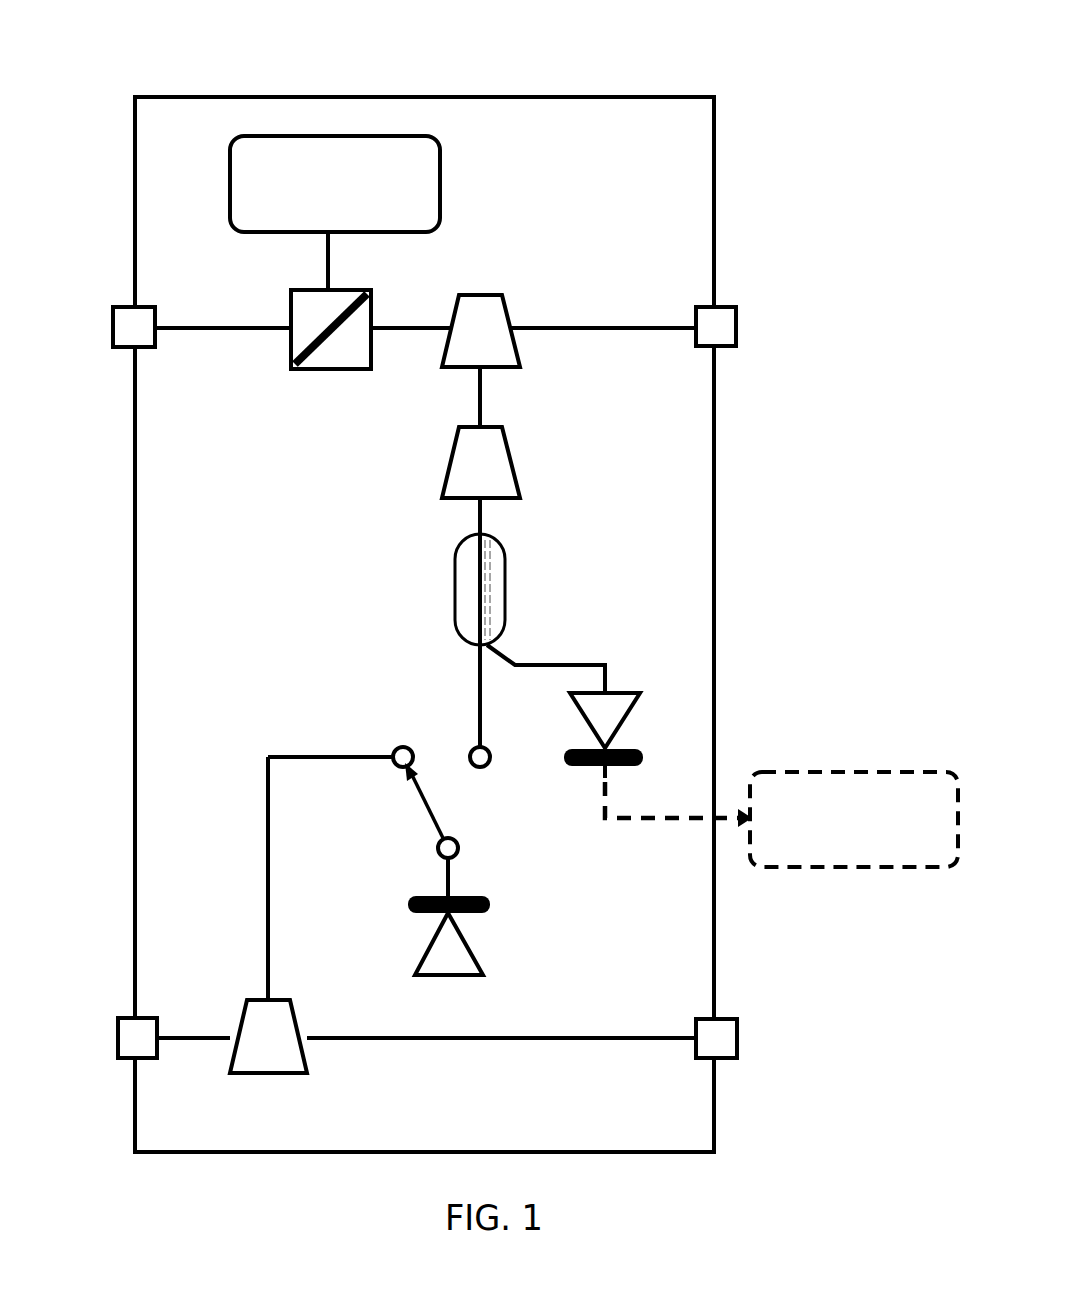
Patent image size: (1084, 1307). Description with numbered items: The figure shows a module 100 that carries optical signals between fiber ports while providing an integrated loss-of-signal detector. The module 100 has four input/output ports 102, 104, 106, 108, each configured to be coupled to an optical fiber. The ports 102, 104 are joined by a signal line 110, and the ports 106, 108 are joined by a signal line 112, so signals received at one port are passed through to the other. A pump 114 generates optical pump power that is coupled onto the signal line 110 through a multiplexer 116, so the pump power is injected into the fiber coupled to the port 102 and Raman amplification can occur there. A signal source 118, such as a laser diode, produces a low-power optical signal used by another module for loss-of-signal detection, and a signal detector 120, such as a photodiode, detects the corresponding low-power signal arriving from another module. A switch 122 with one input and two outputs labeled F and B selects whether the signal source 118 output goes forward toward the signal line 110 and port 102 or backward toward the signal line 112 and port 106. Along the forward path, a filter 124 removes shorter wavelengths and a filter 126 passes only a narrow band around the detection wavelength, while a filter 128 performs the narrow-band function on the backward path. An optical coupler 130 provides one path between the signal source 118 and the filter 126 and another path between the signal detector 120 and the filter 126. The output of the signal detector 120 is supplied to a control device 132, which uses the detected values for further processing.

The module 100 is at (586, 46).
The input/output port 102 is at (121, 304).
The input/output port 104 is at (727, 302).
The input/output port 106 is at (122, 1015).
The input/output port 108 is at (727, 1015).
The signal line 110 is at (580, 334).
The signal line 112 is at (559, 1034).
The pump 114 is at (443, 185).
The multiplexer 116 is at (318, 374).
The signal source 118 is at (479, 942).
The signal detector 120 is at (632, 719).
The switch 122 is at (479, 832).
The filter 124 is at (506, 371).
The filter 126 is at (506, 503).
The filter 128 is at (278, 997).
The optical coupler 130 is at (452, 607).
The control device 132 is at (854, 759).